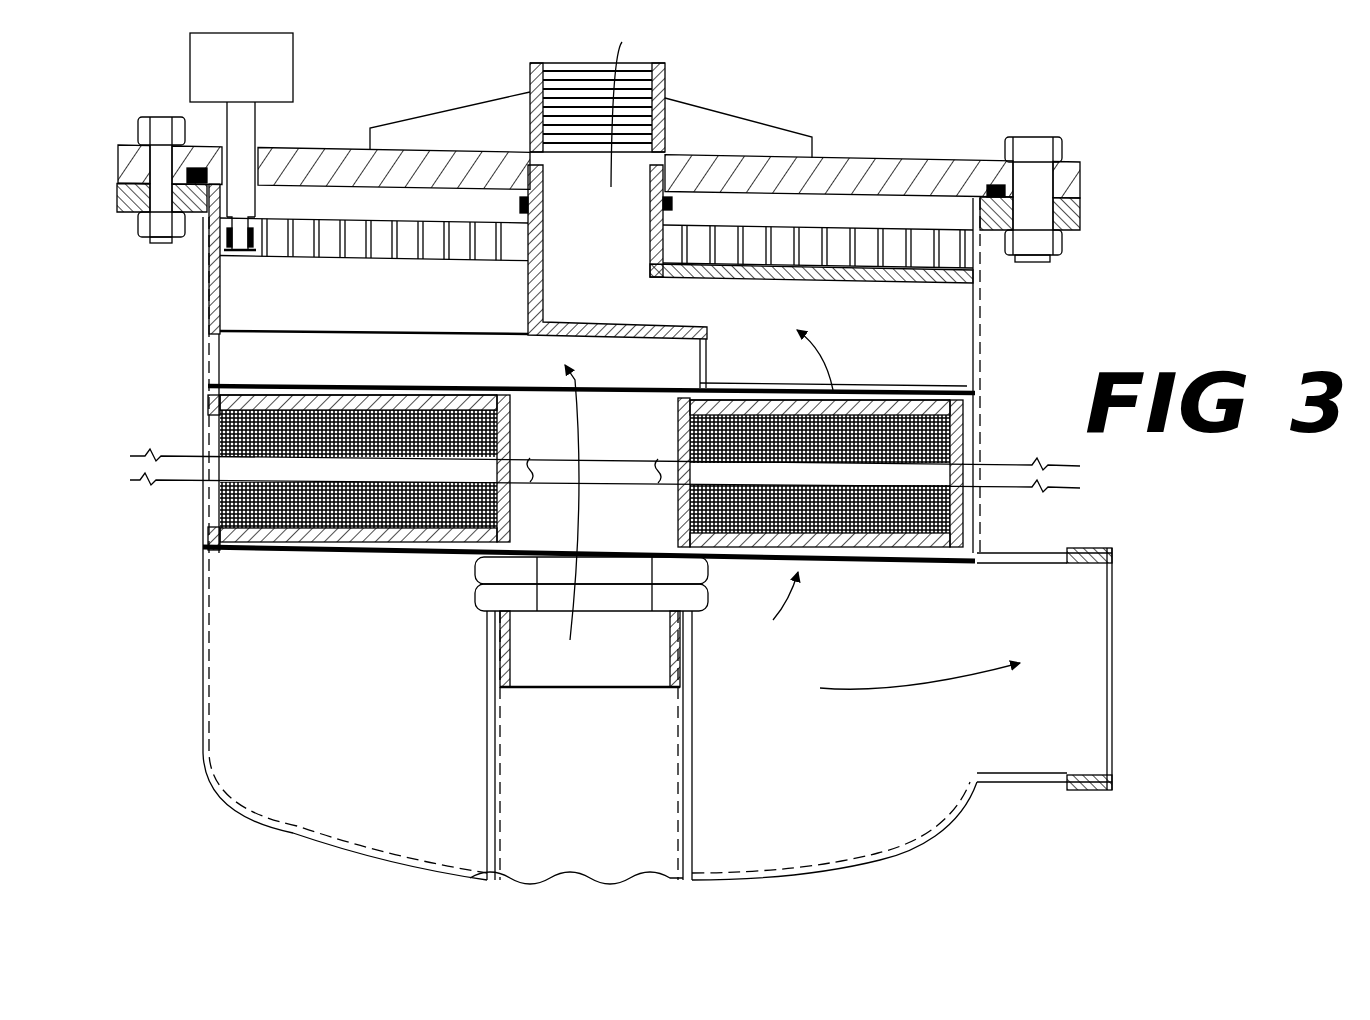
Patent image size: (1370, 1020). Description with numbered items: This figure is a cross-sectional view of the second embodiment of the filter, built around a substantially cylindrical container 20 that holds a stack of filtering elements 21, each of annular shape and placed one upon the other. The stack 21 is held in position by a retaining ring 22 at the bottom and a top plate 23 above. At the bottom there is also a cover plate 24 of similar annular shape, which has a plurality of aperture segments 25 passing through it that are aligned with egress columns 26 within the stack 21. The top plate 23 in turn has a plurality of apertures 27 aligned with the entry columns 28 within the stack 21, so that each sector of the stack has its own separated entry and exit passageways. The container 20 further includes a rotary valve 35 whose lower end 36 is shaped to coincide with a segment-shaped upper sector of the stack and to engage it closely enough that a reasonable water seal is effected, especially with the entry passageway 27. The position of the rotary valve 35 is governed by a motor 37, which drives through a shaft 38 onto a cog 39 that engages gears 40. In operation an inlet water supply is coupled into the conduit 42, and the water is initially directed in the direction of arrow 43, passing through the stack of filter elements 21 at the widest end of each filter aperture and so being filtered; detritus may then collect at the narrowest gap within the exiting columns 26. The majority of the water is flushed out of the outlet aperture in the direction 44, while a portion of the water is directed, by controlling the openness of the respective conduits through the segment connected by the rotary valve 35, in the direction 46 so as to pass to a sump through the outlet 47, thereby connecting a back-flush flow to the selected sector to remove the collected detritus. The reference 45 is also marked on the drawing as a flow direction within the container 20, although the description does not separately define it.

The container 20 is at (203, 622).
The stack of filtering elements 21 is at (207, 418).
The retaining ring 22 is at (210, 540).
The top plate 23 is at (203, 390).
The cover plate 24 is at (322, 547).
The aperture segments 25 is at (403, 547).
The egress columns 26 is at (363, 387).
The apertures 27 is at (260, 386).
The entry columns 28 is at (307, 386).
The rotary valve 35 is at (958, 336).
The lower end of rotary valve 36 is at (980, 386).
The motor 37 is at (283, 67).
The shaft 38 is at (255, 128).
The cog 39 is at (262, 250).
The gears 40 is at (396, 262).
The conduit 42 is at (595, 815).
The arrow 43 is at (583, 517).
The outlet direction 44 is at (875, 688).
The return flow 45 is at (821, 598).
The back flush direction 46 is at (847, 352).
The outlet 47 is at (672, 92).